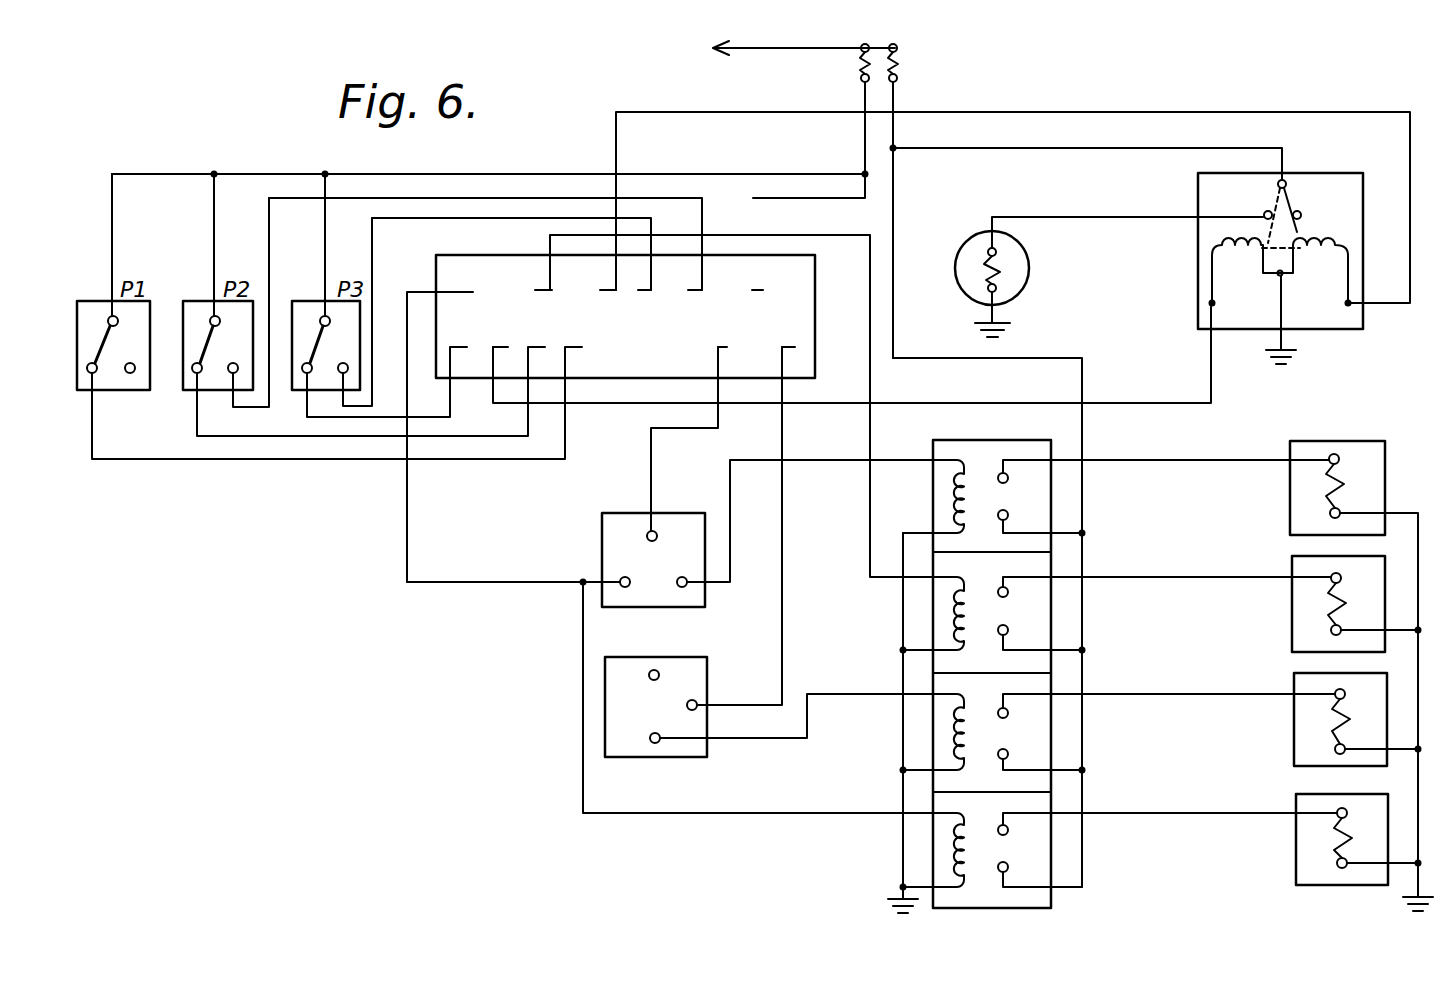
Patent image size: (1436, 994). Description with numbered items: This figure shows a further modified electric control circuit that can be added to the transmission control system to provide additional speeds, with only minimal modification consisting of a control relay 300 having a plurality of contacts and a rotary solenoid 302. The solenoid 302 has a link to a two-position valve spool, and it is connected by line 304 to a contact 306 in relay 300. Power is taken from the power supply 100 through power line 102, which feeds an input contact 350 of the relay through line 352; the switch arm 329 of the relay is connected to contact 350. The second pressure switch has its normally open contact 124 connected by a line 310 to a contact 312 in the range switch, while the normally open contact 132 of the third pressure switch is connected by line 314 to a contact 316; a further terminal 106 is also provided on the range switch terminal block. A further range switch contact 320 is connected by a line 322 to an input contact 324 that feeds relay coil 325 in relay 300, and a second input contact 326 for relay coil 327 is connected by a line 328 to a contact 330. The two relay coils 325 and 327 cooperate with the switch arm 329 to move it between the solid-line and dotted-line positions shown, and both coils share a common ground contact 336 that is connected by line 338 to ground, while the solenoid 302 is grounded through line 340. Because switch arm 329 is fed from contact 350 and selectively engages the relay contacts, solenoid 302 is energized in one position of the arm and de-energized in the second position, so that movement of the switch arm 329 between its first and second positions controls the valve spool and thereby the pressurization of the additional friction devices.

The 12 volt DC power supply 100 is at (771, 48).
The power line 102 is at (897, 96).
The terminal 106 is at (760, 290).
The normally open contact 124 is at (228, 388).
The normally open contact 132 is at (338, 392).
The relay 300 is at (1258, 252).
The rotary solenoid 302 is at (968, 250).
The line 304 is at (1033, 217).
The contact 306 is at (1265, 211).
The line 310 is at (292, 198).
The contact 312 is at (693, 292).
The line 314 is at (414, 214).
The contact 316 is at (648, 292).
The contact 320 is at (614, 292).
The line 322 is at (975, 112).
The input contact 324 is at (1352, 306).
The relay coil 325 is at (1330, 238).
The second input contact 326 is at (1208, 304).
The relay coil 327 is at (1232, 258).
The line 328 is at (1118, 402).
The switch arm 329 is at (1300, 192).
The contact 330 is at (500, 345).
The common ground contact 336 is at (1275, 278).
The line 338 is at (1283, 338).
The line 340 is at (985, 323).
The input contact 350 is at (1285, 180).
The line 352 is at (968, 148).